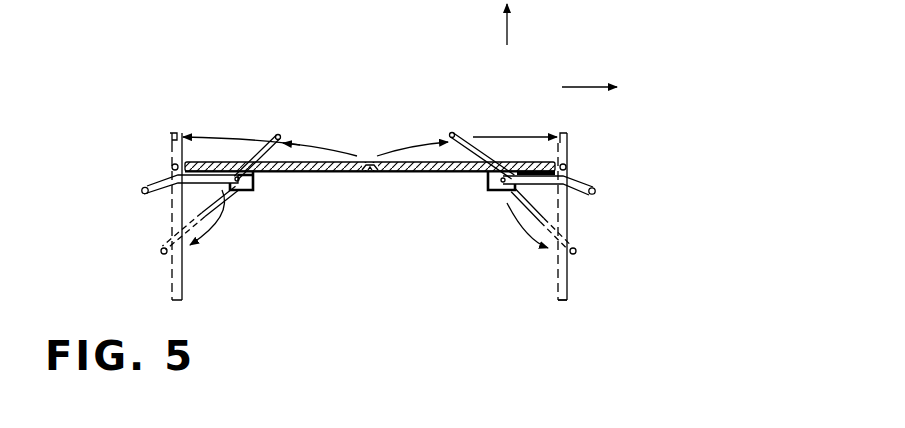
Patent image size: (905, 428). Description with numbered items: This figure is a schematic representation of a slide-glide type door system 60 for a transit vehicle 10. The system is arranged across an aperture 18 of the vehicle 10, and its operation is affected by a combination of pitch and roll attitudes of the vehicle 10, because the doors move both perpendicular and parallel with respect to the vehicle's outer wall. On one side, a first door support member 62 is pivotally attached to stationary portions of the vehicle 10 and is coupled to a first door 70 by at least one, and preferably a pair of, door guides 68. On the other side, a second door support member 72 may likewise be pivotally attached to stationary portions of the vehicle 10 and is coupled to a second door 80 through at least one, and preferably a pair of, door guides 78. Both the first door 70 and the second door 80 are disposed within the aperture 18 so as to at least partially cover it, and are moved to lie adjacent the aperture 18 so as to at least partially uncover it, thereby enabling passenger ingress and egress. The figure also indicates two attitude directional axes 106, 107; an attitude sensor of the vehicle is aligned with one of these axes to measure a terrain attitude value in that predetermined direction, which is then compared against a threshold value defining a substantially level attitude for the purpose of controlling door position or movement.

The vehicle 10 is at (652, 282).
The aperture 18 is at (333, 137).
The slide-glide type door system 60 is at (378, 122).
The first door support member 62 is at (142, 192).
The door guides 68 is at (200, 182).
The first door 70 is at (230, 162).
The second door support member 72 is at (595, 192).
The door guides 78 is at (537, 185).
The second door 80 is at (504, 162).
The attitude directional axis 106 is at (507, 30).
The attitude directional axis 107 is at (587, 86).